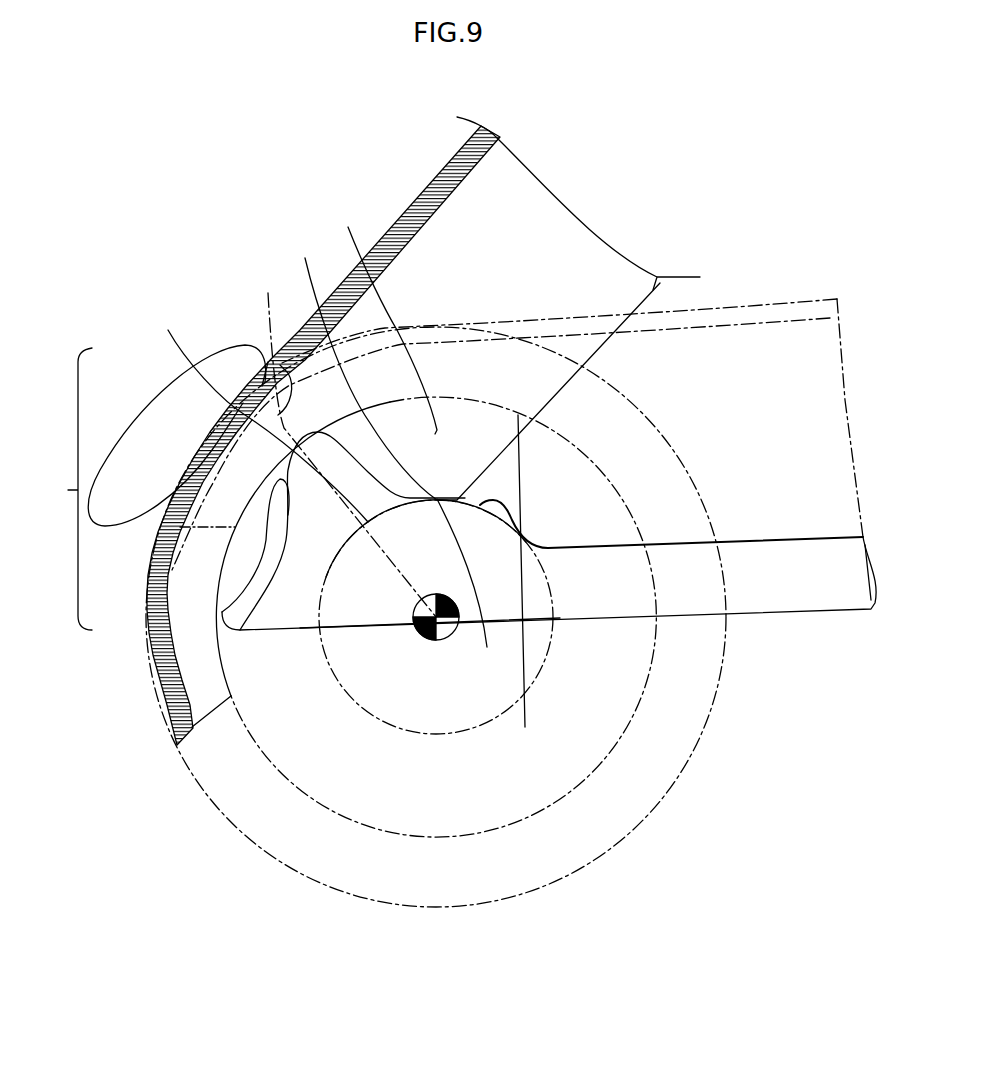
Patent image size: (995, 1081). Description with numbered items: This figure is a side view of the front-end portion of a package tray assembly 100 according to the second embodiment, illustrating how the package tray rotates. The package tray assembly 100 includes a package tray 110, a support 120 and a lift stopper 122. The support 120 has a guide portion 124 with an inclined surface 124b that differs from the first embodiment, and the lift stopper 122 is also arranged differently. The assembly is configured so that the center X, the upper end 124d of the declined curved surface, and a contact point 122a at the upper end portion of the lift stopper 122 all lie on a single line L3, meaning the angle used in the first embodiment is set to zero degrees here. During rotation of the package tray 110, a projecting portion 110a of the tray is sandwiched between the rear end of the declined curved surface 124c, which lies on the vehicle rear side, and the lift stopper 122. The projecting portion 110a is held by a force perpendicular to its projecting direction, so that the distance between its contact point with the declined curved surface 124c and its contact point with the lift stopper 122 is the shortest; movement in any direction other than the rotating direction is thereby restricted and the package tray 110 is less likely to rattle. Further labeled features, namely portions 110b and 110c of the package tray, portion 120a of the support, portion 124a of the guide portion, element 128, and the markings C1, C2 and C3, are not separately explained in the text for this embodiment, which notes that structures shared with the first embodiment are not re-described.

The package tray assembly 100 is at (58, 489).
The package tray 110 is at (389, 199).
The projecting portion 110a is at (187, 640).
The inclined portion of panel 110b is at (381, 317).
The edge portion of panel 110c is at (477, 587).
The support 120 is at (749, 626).
The lower edge of arm 120a is at (572, 622).
The lift stopper 122 is at (147, 427).
The contact point 122a is at (260, 384).
The guide portion 124 is at (361, 598).
The first boss portion 124a is at (534, 587).
The inclined surface 124b is at (471, 363).
The declined curved surface 124c is at (268, 540).
The upper end 124d is at (254, 410).
The end portion of arm 128 is at (822, 590).
The center X is at (440, 637).
The line L3 is at (346, 441).
The first circle C1 is at (548, 906).
The second circle C2 is at (470, 838).
The third circle C3 is at (377, 730).